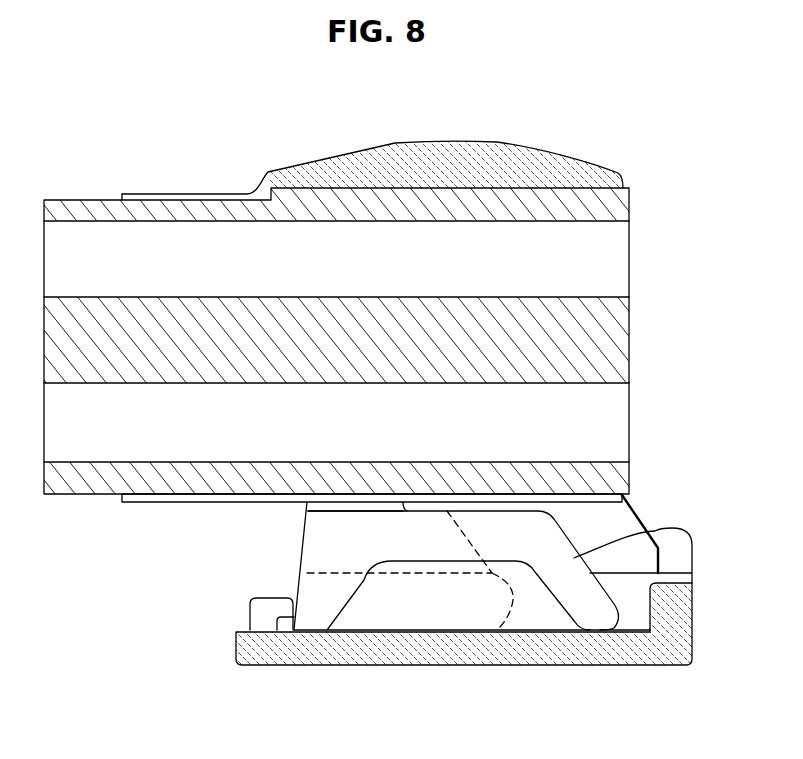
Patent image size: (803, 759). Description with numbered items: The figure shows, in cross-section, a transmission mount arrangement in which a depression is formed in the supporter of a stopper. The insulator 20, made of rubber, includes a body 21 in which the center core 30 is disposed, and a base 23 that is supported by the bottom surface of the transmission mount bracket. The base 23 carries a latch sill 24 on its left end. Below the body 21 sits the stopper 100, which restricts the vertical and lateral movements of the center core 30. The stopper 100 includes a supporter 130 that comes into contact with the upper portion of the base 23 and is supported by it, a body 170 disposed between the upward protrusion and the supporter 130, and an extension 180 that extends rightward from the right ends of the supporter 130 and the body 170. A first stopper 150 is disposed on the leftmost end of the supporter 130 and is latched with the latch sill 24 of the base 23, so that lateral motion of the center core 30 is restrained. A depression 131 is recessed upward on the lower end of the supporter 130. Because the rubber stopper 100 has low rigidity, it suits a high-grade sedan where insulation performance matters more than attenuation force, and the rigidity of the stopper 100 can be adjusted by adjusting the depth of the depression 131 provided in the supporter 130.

The center core 30 is at (67, 190).
The insulator 20 is at (460, 136).
The body 21 is at (560, 170).
The stopper 100 is at (281, 562).
The body 170 is at (317, 526).
The supporter 130 is at (328, 620).
The depression 131 is at (470, 610).
The first stopper 150 is at (278, 620).
The latch sill 24 is at (260, 616).
The extension 180 is at (635, 527).
The base 23 is at (657, 665).